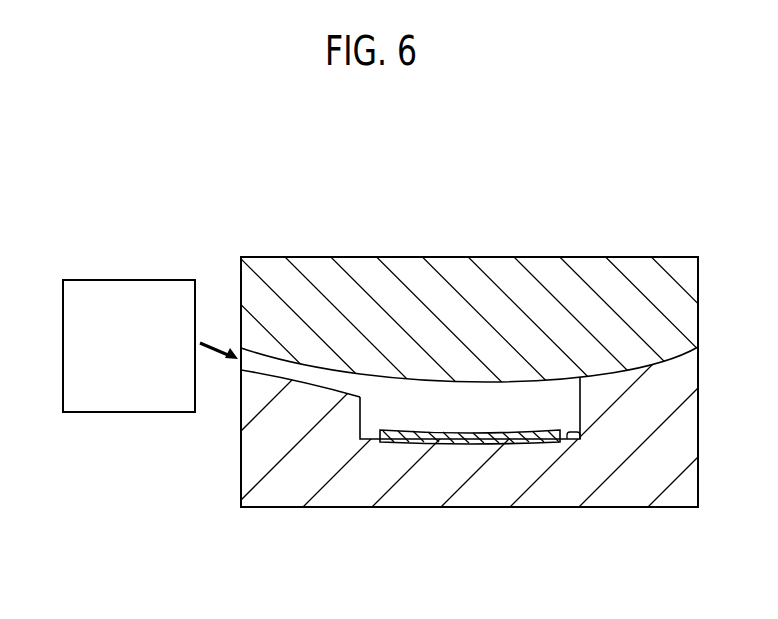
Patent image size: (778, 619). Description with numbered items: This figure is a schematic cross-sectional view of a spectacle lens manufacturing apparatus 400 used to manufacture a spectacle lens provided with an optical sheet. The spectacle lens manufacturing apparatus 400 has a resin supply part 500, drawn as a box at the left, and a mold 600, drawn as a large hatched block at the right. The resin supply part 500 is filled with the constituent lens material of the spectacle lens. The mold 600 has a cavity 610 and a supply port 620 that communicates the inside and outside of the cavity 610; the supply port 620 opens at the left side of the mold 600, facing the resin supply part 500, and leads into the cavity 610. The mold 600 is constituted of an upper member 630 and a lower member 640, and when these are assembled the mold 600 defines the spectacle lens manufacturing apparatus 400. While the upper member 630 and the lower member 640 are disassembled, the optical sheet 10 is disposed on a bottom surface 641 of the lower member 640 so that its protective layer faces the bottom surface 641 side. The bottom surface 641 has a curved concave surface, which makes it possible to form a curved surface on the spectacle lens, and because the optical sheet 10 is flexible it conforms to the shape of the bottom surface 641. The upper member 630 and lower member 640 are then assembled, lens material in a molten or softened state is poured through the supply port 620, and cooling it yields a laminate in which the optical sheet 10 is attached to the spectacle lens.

The spectacle lens manufacturing apparatus 400 is at (358, 174).
The resin supply part 500 is at (130, 280).
The mold 600 is at (637, 248).
The cavity 610 is at (467, 432).
The supply port 620 is at (243, 362).
The upper member 630 is at (503, 257).
The lower member 640 is at (650, 500).
The bottom surface 641 is at (580, 439).
The optical sheet 10 is at (508, 440).